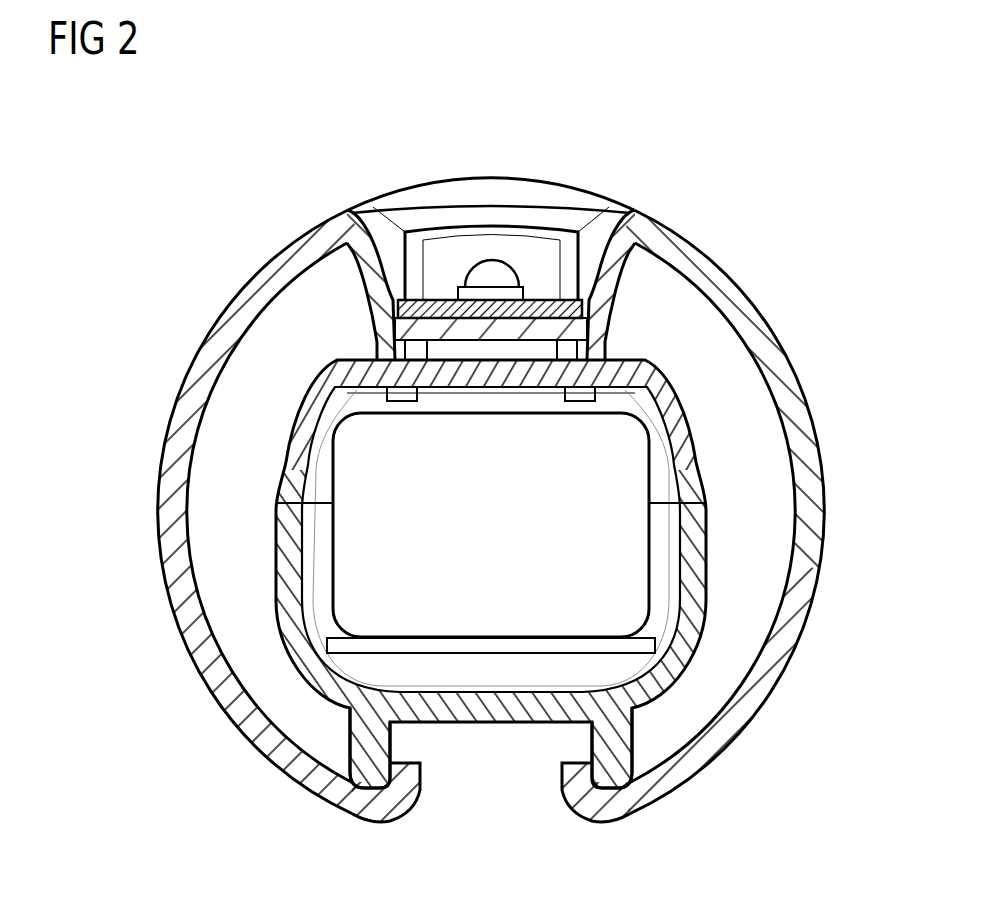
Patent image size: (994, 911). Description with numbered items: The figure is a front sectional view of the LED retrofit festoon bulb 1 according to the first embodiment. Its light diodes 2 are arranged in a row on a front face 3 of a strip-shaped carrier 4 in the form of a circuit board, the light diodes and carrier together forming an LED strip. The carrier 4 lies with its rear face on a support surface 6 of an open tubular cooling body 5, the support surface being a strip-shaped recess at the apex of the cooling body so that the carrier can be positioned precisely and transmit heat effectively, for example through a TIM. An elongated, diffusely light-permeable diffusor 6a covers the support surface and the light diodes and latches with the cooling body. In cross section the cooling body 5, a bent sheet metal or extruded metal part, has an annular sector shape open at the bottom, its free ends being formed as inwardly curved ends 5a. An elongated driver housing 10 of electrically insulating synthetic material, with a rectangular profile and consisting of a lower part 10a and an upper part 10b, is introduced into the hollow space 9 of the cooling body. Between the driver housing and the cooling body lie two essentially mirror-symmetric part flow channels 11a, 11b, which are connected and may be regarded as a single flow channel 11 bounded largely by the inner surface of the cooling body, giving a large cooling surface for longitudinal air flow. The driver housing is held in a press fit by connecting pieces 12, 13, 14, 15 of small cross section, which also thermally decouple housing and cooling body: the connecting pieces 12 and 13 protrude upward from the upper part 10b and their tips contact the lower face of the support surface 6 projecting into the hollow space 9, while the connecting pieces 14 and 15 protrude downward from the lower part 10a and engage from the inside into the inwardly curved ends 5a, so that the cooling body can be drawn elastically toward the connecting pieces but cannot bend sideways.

The LED retrofit festoon bulb 1 is at (762, 104).
The light diodes 2 is at (490, 268).
The front face 3 is at (444, 298).
The carrier 4 is at (545, 332).
The cooling body 5 is at (778, 655).
The inwardly curved ends 5a is at (412, 780).
The support surface 6 is at (600, 292).
The diffusor 6a is at (540, 183).
The hollow space 9 is at (750, 570).
The driver housing 10 is at (268, 518).
The lower part 10a is at (293, 576).
The upper part 10b is at (302, 446).
The flow channel 11 is at (491, 512).
The part flow channel 11a is at (760, 458).
The part flow channel 11b is at (228, 468).
The connecting piece 12 is at (393, 352).
The connecting piece 13 is at (600, 352).
The connecting piece 14 is at (356, 742).
The connecting piece 15 is at (628, 752).